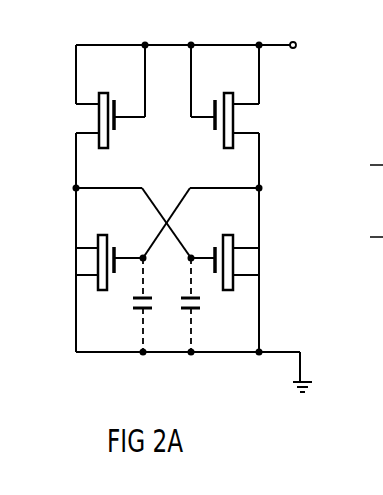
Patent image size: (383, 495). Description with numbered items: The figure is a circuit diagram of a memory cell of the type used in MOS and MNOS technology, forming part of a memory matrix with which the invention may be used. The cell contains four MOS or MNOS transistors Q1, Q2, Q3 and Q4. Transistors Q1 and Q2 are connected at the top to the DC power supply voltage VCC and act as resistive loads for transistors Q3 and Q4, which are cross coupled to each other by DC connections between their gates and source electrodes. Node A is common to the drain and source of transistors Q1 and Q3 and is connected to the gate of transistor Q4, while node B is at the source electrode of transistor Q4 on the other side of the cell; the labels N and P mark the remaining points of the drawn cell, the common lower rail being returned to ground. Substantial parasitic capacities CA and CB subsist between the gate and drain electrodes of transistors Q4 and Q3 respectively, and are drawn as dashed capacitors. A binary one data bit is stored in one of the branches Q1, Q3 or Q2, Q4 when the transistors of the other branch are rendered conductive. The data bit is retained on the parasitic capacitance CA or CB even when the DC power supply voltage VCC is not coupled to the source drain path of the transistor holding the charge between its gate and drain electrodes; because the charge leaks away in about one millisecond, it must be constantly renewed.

The MOS or MNOS transistor Q1 is at (122, 123).
The MOS or MNOS transistor Q2 is at (235, 120).
The MOS or MNOS transistor Q3 is at (109, 267).
The MOS or MNOS transistor Q4 is at (237, 262).
The parasitic capacitance CB is at (150, 305).
The parasitic capacitance CA is at (199, 305).
The node A is at (66, 189).
The node B is at (268, 189).
The node N is at (60, 241).
The node P is at (145, 374).
The DC power supply voltage VCC is at (313, 47).